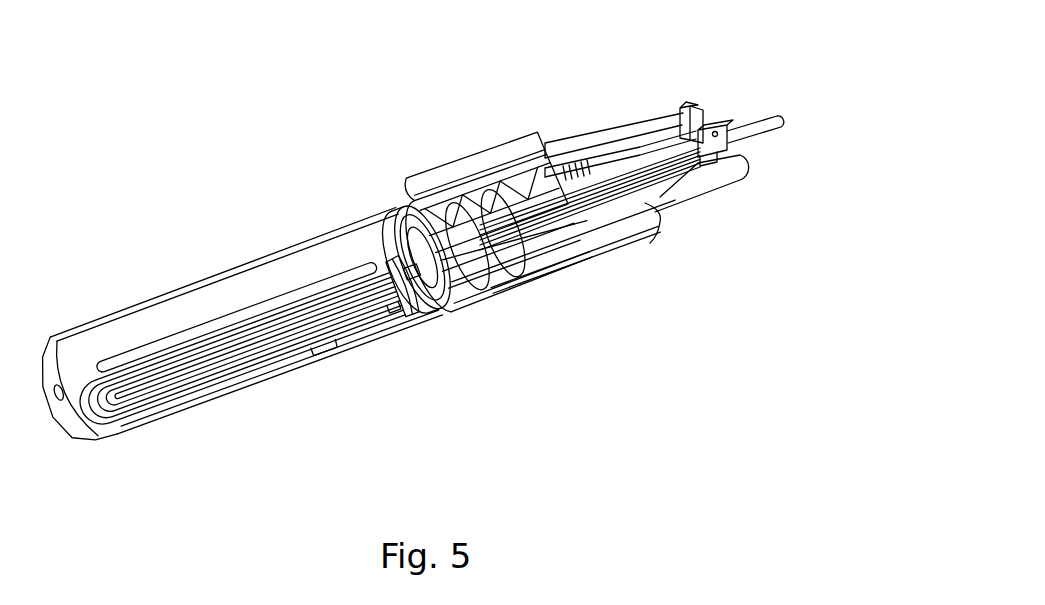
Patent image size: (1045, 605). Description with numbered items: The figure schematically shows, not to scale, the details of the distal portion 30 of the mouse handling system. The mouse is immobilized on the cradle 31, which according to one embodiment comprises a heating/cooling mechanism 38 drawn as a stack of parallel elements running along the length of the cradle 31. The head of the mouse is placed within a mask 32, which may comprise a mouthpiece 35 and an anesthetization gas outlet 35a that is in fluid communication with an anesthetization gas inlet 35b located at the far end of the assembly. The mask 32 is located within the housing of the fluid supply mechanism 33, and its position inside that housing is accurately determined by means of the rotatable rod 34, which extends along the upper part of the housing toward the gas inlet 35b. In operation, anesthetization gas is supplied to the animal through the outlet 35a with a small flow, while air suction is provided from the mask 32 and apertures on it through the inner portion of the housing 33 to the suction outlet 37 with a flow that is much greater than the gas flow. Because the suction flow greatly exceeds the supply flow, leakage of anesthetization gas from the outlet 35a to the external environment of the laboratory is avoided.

The distal portion 30 is at (203, 211).
The cradle 31 is at (262, 373).
The mask 32 is at (442, 260).
The housing of fluid supply mechanism 33 is at (492, 158).
The rotatable rod 34 is at (610, 167).
The mouthpiece 35 is at (403, 263).
The anesthetization gas outlet 35a is at (415, 270).
The anesthetization gas inlet 35b is at (757, 125).
The suction outlet 37 is at (567, 170).
The heating/cooling mechanism 38 is at (305, 295).